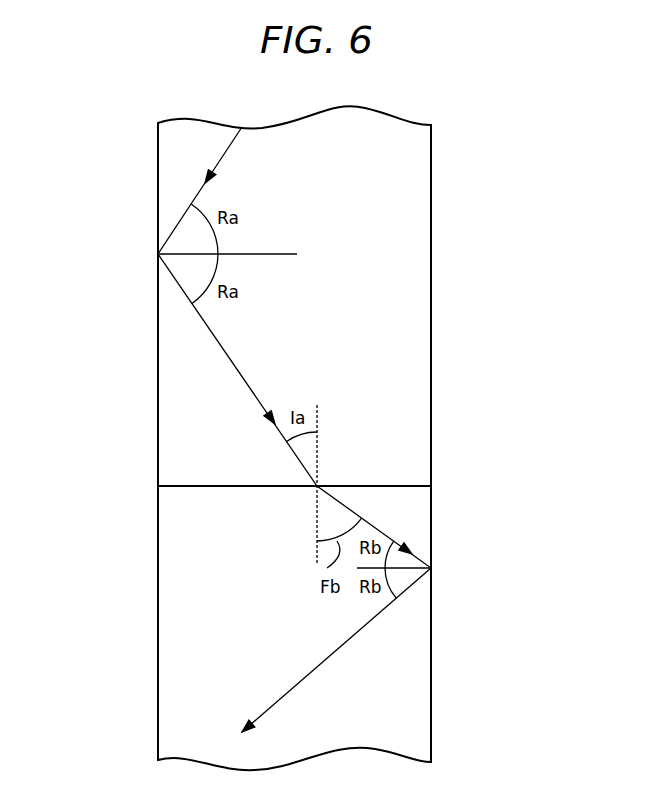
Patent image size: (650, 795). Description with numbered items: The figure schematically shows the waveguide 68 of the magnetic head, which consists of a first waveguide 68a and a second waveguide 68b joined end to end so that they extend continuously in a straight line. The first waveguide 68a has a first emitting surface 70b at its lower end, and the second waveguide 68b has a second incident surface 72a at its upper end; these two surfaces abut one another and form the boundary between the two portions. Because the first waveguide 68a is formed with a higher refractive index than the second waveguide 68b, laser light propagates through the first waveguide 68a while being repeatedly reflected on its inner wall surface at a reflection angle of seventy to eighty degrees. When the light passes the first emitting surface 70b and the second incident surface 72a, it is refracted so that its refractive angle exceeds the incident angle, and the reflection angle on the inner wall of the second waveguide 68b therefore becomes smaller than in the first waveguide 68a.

The waveguide 68 is at (268, 438).
The first waveguide 68a is at (412, 340).
The second waveguide 68b is at (413, 692).
The first emitting surface 70b is at (182, 486).
The second incident surface 72a is at (402, 486).